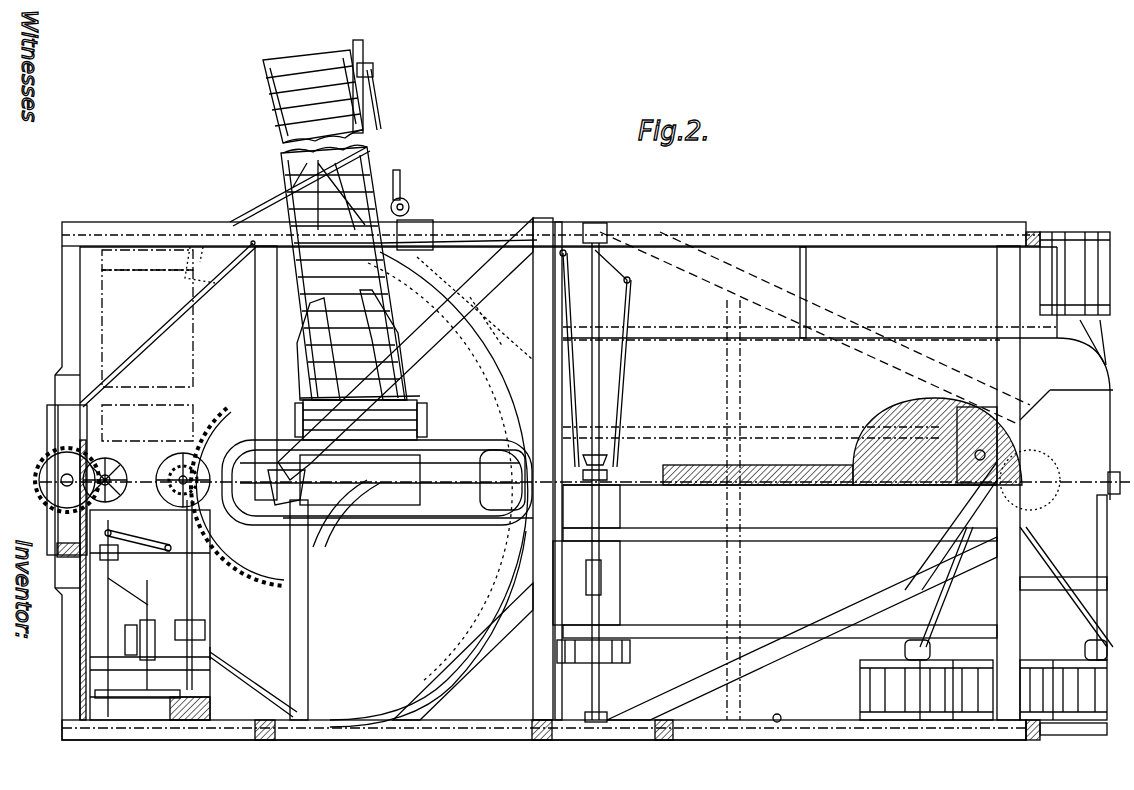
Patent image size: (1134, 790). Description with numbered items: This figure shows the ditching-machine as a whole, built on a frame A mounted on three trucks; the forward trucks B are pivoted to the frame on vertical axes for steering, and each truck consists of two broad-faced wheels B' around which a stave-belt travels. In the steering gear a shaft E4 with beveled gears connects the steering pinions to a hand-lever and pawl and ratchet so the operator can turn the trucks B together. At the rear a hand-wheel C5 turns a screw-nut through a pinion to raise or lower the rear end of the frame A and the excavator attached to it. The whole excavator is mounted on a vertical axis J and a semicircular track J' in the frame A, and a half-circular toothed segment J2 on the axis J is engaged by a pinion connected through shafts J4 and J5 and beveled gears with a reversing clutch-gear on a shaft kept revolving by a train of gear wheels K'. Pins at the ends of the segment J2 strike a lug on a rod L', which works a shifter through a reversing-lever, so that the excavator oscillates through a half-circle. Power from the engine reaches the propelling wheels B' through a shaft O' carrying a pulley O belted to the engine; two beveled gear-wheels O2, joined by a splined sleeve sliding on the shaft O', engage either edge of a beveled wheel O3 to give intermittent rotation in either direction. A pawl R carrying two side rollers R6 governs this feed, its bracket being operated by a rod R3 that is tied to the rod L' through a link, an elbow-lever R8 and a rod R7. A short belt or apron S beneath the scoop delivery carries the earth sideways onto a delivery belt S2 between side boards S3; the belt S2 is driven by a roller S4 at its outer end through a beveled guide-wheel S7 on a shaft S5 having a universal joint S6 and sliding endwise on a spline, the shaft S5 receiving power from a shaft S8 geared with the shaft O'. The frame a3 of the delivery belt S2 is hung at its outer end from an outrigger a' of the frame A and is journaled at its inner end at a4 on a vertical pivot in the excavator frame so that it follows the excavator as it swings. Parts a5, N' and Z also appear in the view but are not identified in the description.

The frame A is at (585, 471).
The forward truck B is at (1075, 286).
The broad-faced wheel B' is at (983, 638).
The outrigger a' is at (300, 186).
The frame of the delivery-belt a3 is at (283, 140).
The journal a4 is at (360, 383).
The elevator side bar a5 is at (290, 186).
The short belt or apron S is at (361, 420).
The delivery belt S2 is at (343, 272).
The side boards S3 is at (318, 349).
The roller S4 is at (353, 77).
The shaft S5 is at (380, 125).
The universal joint S6 is at (412, 210).
The beveled guide-wheel S7 is at (373, 70).
The shaft S8 is at (530, 222).
The pawl R is at (602, 580).
The rod R3 is at (603, 358).
The side rollers R6 is at (600, 222).
The rod R7 is at (232, 265).
The elbow-lever R8 is at (187, 268).
The pulley O is at (602, 652).
The shaft O' is at (603, 482).
The beveled gear-wheels O2 is at (609, 461).
The beveled wheel O3 is at (611, 487).
The rod L' is at (168, 345).
The hand-wheel C5 is at (140, 462).
The vertical axis J is at (377, 466).
The semicircular track J' is at (428, 629).
The half-circular toothed segment J2 is at (233, 570).
The shaft J4 is at (165, 595).
The shaft J5 is at (128, 590).
The train of gear wheels K' is at (125, 562).
The shaft E4 is at (830, 486).
The pin N' is at (783, 706).
The standard Z is at (576, 582).